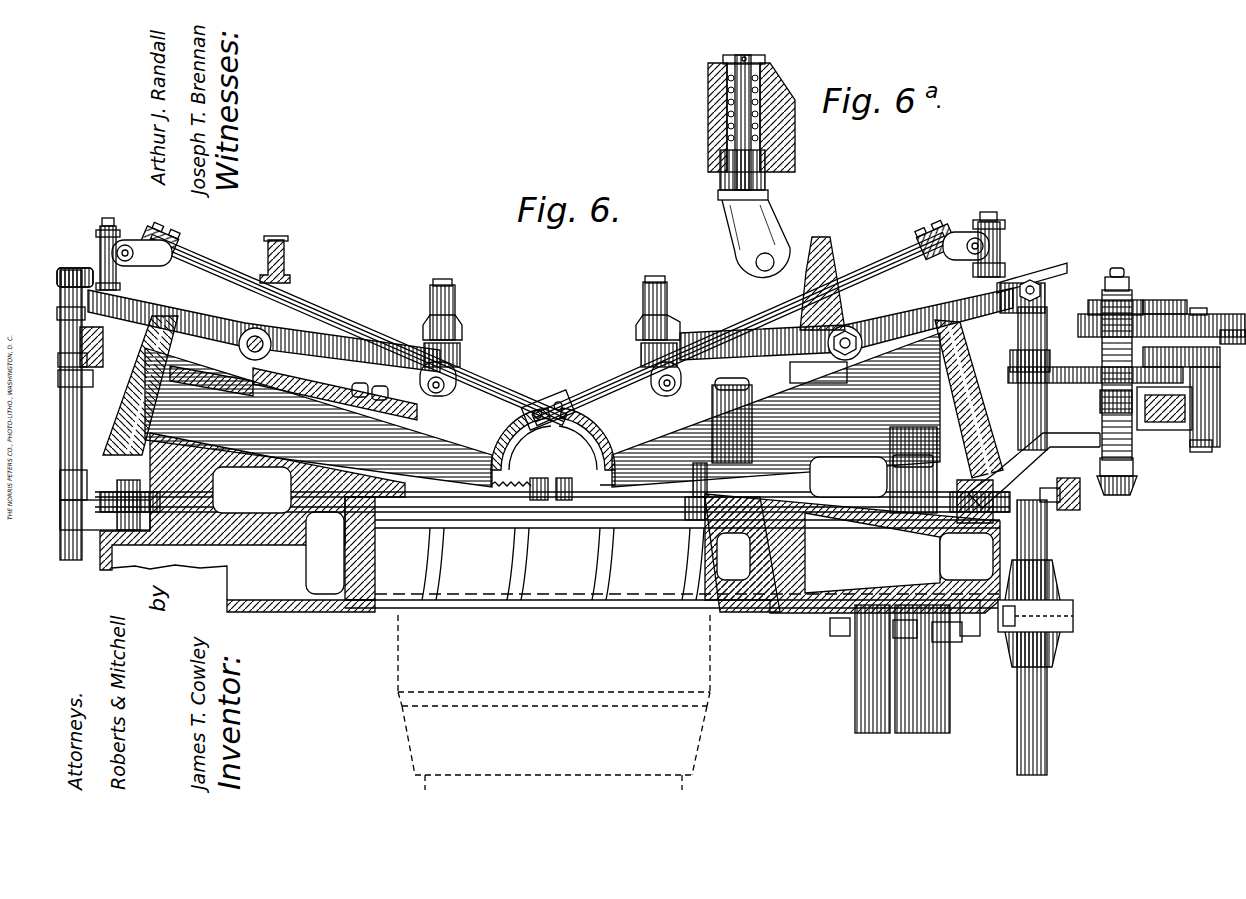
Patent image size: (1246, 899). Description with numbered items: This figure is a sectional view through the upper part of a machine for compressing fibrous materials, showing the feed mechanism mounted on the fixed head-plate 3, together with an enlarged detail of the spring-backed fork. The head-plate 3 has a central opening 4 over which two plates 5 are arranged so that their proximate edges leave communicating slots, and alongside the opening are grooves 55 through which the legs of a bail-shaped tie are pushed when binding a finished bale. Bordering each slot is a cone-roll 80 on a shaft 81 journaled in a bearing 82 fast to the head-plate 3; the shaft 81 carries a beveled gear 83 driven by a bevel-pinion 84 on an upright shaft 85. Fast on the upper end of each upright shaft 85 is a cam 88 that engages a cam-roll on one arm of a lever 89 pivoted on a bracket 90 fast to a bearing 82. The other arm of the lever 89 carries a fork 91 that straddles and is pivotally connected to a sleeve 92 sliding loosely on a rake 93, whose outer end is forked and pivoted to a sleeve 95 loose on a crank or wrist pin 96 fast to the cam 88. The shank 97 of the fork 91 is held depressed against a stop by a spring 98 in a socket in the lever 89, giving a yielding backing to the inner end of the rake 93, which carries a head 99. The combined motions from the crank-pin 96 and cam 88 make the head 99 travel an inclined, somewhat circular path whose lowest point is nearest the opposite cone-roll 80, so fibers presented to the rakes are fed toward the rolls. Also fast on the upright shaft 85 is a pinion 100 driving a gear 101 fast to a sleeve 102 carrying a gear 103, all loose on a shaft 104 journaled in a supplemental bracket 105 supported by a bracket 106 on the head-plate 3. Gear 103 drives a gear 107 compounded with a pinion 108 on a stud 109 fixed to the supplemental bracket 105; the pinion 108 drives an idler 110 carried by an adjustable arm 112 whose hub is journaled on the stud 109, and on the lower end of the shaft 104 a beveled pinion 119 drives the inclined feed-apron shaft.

In FIG. 6, the head-plate 3 is at (550, 583).
In FIG. 6, the central opening 4 is at (672, 655).
In FIG. 6, the plates 5 is at (540, 490).
In FIG. 6, the grooves 55 is at (690, 503).
In FIG. 6, the cone-roll 80 is at (468, 440).
In FIG. 6, the shaft 81 is at (338, 412).
In FIG. 6, the bearing 82 is at (857, 447).
In FIG. 6, the beveled gear 83 is at (135, 362).
In FIG. 6, the bevel-pinion 84 is at (1075, 497).
In FIG. 6, the upright shaft 85 is at (1048, 698).
In FIG. 6, the cam 88 is at (90, 268).
In FIG. 6, the lever 89 is at (200, 324).
In FIG. 6, the bracket 90 is at (288, 266).
In FIG. 6A, the fork 91 is at (742, 228).
In FIG. 6, the fork 91 is at (467, 351).
In FIG. 6, the sleeve 92 is at (458, 378).
In FIG. 6, the rake 93 is at (501, 393).
In FIG. 6, the sleeve 95 is at (128, 240).
In FIG. 6, the crank or wrist pin 96 is at (107, 226).
In FIG. 6A, the shank 97 is at (748, 57).
In FIG. 6A, the spring 98 is at (712, 100).
In FIG. 6, the head 99 is at (495, 462).
In FIG. 6, the pinion 100 is at (1010, 368).
In FIG. 6, the gear 101 is at (1068, 366).
In FIG. 6, the sleeve 102 is at (1102, 343).
In FIG. 6, the gear 103 is at (1090, 326).
In FIG. 6, the shaft 104 is at (1117, 277).
In FIG. 6, the supplemental bracket 105 is at (1100, 399).
In FIG. 6, the bracket 106 is at (1078, 434).
In FIG. 6, the gear 107 is at (1195, 317).
In FIG. 6, the pinion 108 is at (1220, 341).
In FIG. 6, the stud 109 is at (1193, 308).
In FIG. 6, the idler 110 is at (1180, 302).
In FIG. 6, the adjustable arm 112 is at (1210, 357).
In FIG. 6, the beveled pinion 119 is at (1135, 490).